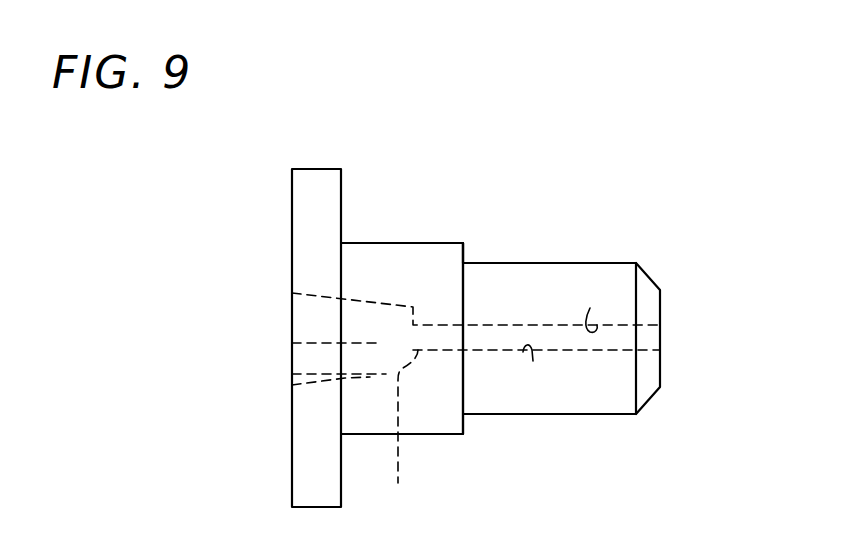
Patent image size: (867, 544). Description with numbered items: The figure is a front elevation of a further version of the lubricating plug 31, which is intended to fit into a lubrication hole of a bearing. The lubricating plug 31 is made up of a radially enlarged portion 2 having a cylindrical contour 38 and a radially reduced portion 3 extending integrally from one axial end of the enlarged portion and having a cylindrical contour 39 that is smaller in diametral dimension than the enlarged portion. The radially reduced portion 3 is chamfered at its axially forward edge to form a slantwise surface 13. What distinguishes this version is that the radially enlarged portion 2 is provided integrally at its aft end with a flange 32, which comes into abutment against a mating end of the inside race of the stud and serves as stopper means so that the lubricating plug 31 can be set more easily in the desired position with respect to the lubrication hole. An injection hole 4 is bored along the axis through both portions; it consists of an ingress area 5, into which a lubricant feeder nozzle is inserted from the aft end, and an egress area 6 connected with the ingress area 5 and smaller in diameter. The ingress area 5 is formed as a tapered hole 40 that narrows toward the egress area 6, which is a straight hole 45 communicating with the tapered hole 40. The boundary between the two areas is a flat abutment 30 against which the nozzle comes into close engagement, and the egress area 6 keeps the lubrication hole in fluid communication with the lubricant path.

The flange 32 is at (312, 190).
The radially enlarged portion 2 is at (404, 262).
The cylindrical contour 38 is at (440, 243).
The lubricating plug 31 is at (497, 225).
The cylindrical contour 39 is at (525, 262).
The radially reduced portion 3 is at (552, 293).
The egress area 6 is at (590, 308).
The slantwise surface 13 is at (652, 283).
The ingress area 5 is at (318, 295).
The injection hole 4 is at (292, 343).
The tapered hole 40 is at (292, 385).
The flat abutment 30 is at (476, 437).
The straight hole 45 is at (533, 362).